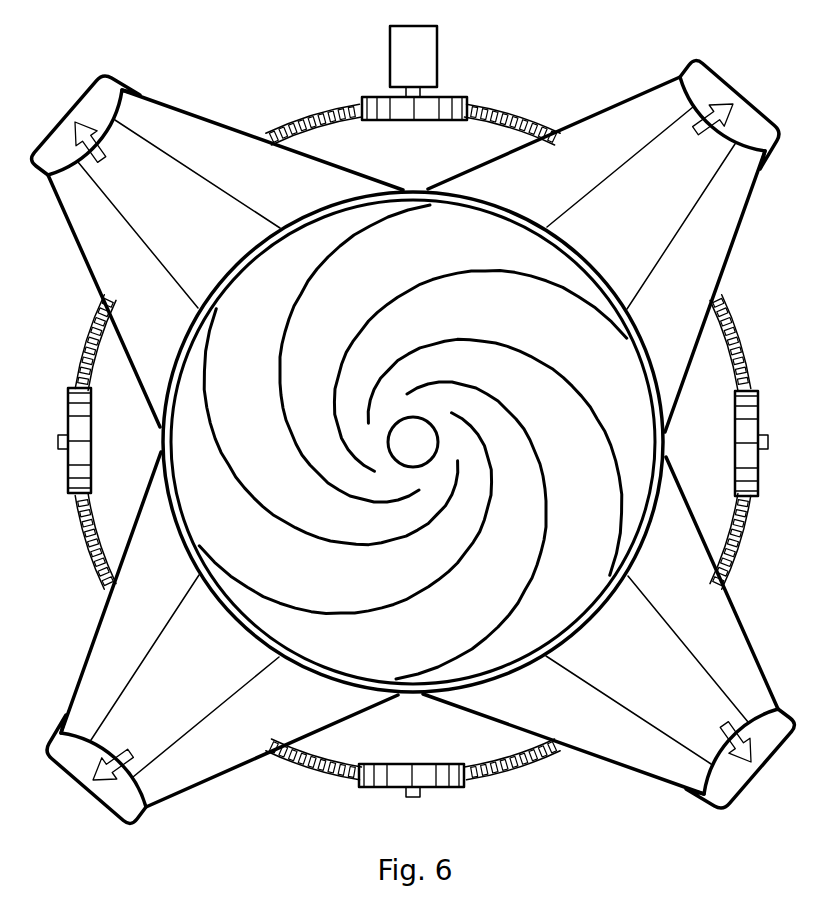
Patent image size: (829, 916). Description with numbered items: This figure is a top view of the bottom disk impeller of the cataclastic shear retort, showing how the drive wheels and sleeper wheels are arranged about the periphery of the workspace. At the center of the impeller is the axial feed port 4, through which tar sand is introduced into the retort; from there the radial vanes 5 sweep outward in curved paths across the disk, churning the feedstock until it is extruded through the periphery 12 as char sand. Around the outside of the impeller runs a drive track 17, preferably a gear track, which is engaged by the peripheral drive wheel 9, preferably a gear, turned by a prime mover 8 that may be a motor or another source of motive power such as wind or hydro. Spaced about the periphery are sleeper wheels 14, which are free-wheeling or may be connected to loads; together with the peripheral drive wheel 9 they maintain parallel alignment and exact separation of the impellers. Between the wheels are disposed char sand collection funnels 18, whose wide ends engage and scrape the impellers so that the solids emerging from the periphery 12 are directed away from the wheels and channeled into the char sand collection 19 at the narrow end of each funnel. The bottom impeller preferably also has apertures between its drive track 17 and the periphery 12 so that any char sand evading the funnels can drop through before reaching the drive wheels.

The axial feed port 4 is at (413, 442).
The radial vane 5 is at (400, 288).
The prime mover 8 is at (413, 56).
The peripheral drive wheel 9 is at (423, 110).
The periphery of the workspace 12 is at (577, 265).
The sleeper wheel 14 is at (413, 546).
The drive track 17 is at (318, 112).
The char sand collection funnel 18 is at (617, 120).
The char sand collection 19 is at (773, 150).